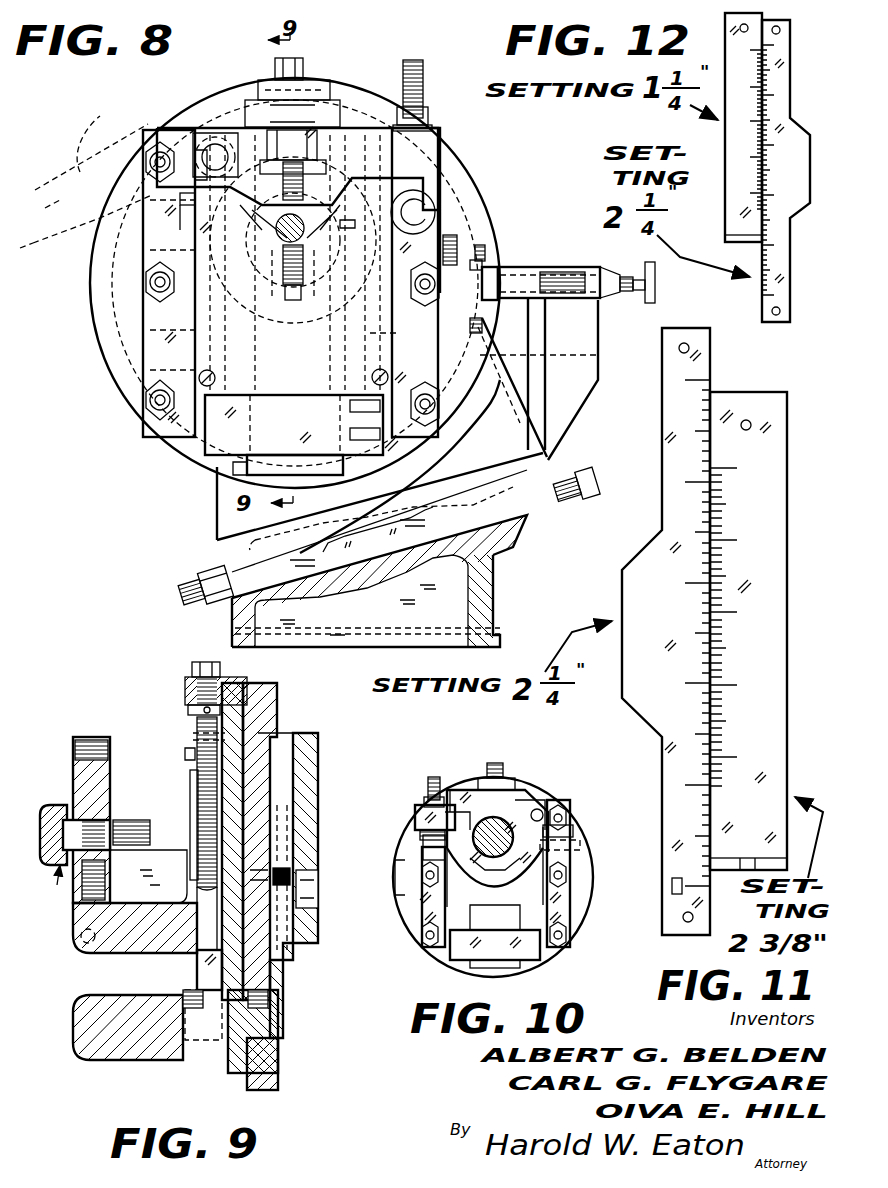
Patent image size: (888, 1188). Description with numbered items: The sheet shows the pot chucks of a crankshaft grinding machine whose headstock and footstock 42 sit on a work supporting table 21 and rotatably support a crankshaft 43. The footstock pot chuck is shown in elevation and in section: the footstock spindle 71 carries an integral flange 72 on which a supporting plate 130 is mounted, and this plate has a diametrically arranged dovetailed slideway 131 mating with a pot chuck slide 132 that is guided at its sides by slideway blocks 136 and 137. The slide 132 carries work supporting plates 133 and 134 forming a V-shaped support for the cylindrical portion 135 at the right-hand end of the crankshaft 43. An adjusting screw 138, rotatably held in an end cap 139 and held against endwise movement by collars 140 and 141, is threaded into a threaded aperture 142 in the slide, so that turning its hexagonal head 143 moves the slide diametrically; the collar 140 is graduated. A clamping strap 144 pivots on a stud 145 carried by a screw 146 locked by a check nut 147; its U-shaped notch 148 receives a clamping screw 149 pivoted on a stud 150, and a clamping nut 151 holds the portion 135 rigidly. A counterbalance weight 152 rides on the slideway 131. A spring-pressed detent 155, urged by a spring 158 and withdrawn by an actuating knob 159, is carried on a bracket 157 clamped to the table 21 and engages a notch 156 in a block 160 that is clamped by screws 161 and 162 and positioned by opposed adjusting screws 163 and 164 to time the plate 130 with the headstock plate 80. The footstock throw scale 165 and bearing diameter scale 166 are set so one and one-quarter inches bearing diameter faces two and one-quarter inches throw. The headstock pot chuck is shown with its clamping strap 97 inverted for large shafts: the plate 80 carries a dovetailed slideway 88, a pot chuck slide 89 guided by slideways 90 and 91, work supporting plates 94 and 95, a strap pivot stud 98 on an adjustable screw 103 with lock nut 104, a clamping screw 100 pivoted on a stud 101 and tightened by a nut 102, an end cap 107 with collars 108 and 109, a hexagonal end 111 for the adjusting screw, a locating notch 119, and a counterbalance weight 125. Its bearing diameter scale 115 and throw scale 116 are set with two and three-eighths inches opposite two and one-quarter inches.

In FIG. 8, the work supporting table 21 is at (482, 600).
In FIG. 8, the footstock 42 is at (457, 240).
In FIG. 9, the crankshaft 43 is at (51, 886).
In FIG. 9, the spindle 71 is at (318, 840).
In FIG. 8, the flange 72 is at (157, 370).
In FIG. 9, the flange 72 is at (297, 757).
In FIG. 10, the circular plate 80 is at (585, 878).
In FIG. 10, the dovetailed slideway 88 is at (522, 782).
In FIG. 10, the pot chuck slide 89 is at (570, 917).
In FIG. 10, the slideway or guideway 90 is at (430, 913).
In FIG. 10, the slideway or guideway 91 is at (557, 902).
In FIG. 10, the work supporting plate 94 is at (480, 870).
In FIG. 10, the work supporting plate 95 is at (503, 870).
In FIG. 10, the clamping strap 97 is at (433, 812).
In FIG. 10, the stud 98 is at (537, 808).
In FIG. 10, the clamping screw 100 is at (428, 780).
In FIG. 10, the stud 101 is at (428, 848).
In FIG. 10, the nut 102 is at (428, 797).
In FIG. 10, the screw 103 is at (543, 833).
In FIG. 10, the lock nut 104 is at (548, 858).
In FIG. 10, the end cap 107 is at (508, 777).
In FIG. 10, the collar 108 is at (507, 767).
In FIG. 10, the collar 109 is at (492, 778).
In FIG. 10, the hexagonally shaped end 111 is at (493, 762).
In FIG. 10, the bearing diameter scale 115 is at (450, 790).
In FIG. 11, the bearing diameter scale 115 is at (770, 446).
In FIG. 10, the throw scale 116 is at (432, 823).
In FIG. 11, the throw scale 116 is at (653, 560).
In FIG. 10, the notch 119 is at (400, 875).
In FIG. 10, the counterbalance weight 125 is at (463, 952).
In FIG. 8, the supporting plate 130 is at (445, 175).
In FIG. 9, the supporting plate 130 is at (262, 700).
In FIG. 8, the dovetailed slideway 131 is at (253, 130).
In FIG. 9, the dovetailed slideway 131 is at (240, 722).
In FIG. 8, the pot chuck slide 132 is at (215, 148).
In FIG. 9, the pot chuck slide 132 is at (165, 858).
In FIG. 8, the work supporting plate 133 is at (275, 290).
In FIG. 8, the work supporting plate 134 is at (310, 290).
In FIG. 8, the cylindrical portion 135 is at (292, 302).
In FIG. 9, the cylindrical portion 135 is at (65, 815).
In FIG. 8, the side guide or slideway block 136 is at (155, 333).
In FIG. 9, the side guide or slideway block 136 is at (205, 963).
In FIG. 8, the side guide or slideway block 137 is at (485, 400).
In FIG. 8, the adjusting screw 138 is at (263, 133).
In FIG. 9, the adjusting screw 138 is at (193, 733).
In FIG. 8, the end cap 139 is at (312, 85).
In FIG. 9, the end cap 139 is at (187, 695).
In FIG. 8, the collar 140 is at (275, 70).
In FIG. 9, the collar 140 is at (185, 682).
In FIG. 8, the collar 141 is at (322, 118).
In FIG. 9, the collar 141 is at (190, 712).
In FIG. 9, the threaded aperture 142 is at (190, 750).
In FIG. 8, the hexagonally shaped head 143 is at (305, 62).
In FIG. 9, the hexagonally shaped head 143 is at (192, 666).
In FIG. 8, the clamping strap 144 is at (163, 115).
In FIG. 9, the clamping strap 144 is at (188, 772).
In FIG. 8, the stud 145 is at (207, 143).
In FIG. 9, the stud 145 is at (86, 752).
In FIG. 8, the screw 146 is at (200, 195).
In FIG. 9, the screw 146 is at (85, 908).
In FIG. 8, the check nut 147 is at (182, 212).
In FIG. 9, the check nut 147 is at (102, 820).
In FIG. 8, the U-shaped notch 148 is at (388, 118).
In FIG. 9, the U-shaped notch 148 is at (207, 833).
In FIG. 8, the clamping screw 149 is at (423, 98).
In FIG. 8, the stud 150 is at (455, 222).
In FIG. 8, the clamping nut 151 is at (428, 125).
In FIG. 8, the counterbalance weight 152 is at (227, 443).
In FIG. 9, the counterbalance weight 152 is at (107, 1045).
In FIG. 8, the spring-pressed detent 155 is at (505, 285).
In FIG. 8, the notch 156 is at (492, 268).
In FIG. 8, the bracket 157 is at (230, 555).
In FIG. 8, the spring 158 is at (585, 272).
In FIG. 8, the actuating knob 159 is at (640, 305).
In FIG. 8, the block 160 is at (527, 323).
In FIG. 8, the screw 161 is at (475, 248).
In FIG. 8, the screw 162 is at (470, 325).
In FIG. 8, the adjusting screw 163 is at (485, 252).
In FIG. 8, the adjusting screw 164 is at (532, 355).
In FIG. 8, the throw scale 165 is at (450, 195).
In FIG. 12, the throw scale 165 is at (790, 208).
In FIG. 8, the bearing diameter scale 166 is at (440, 160).
In FIG. 12, the bearing diameter scale 166 is at (735, 220).